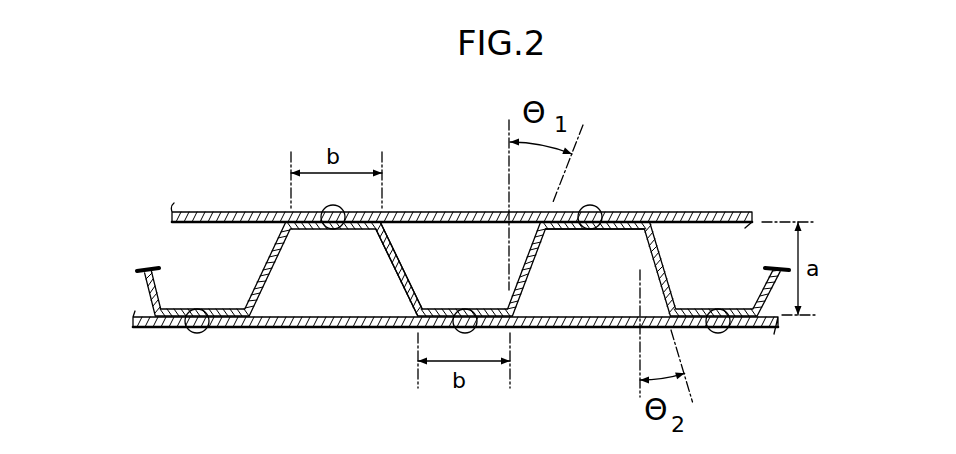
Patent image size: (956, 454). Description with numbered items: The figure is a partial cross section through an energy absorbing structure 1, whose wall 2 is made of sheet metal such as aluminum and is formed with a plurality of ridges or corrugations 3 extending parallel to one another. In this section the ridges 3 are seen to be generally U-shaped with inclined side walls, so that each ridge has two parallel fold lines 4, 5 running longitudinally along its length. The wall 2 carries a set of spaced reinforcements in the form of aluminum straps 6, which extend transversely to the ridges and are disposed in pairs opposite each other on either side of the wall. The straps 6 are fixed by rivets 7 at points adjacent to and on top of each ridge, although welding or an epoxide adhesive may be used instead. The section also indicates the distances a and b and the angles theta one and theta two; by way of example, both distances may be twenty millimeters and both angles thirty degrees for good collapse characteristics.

The energy absorbing structure 1 is at (710, 203).
The wall 2 is at (401, 282).
The ridges or corrugations 3 is at (348, 247).
The fold line 4 is at (658, 214).
The fold line 5 is at (521, 216).
The straps 6 is at (225, 212).
The rivets 7 is at (205, 332).